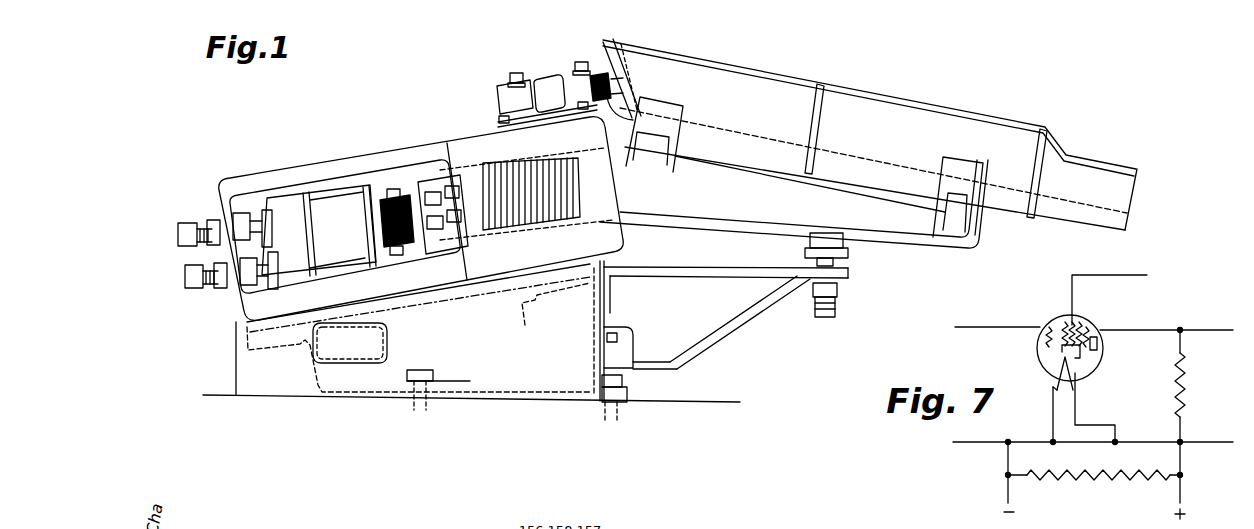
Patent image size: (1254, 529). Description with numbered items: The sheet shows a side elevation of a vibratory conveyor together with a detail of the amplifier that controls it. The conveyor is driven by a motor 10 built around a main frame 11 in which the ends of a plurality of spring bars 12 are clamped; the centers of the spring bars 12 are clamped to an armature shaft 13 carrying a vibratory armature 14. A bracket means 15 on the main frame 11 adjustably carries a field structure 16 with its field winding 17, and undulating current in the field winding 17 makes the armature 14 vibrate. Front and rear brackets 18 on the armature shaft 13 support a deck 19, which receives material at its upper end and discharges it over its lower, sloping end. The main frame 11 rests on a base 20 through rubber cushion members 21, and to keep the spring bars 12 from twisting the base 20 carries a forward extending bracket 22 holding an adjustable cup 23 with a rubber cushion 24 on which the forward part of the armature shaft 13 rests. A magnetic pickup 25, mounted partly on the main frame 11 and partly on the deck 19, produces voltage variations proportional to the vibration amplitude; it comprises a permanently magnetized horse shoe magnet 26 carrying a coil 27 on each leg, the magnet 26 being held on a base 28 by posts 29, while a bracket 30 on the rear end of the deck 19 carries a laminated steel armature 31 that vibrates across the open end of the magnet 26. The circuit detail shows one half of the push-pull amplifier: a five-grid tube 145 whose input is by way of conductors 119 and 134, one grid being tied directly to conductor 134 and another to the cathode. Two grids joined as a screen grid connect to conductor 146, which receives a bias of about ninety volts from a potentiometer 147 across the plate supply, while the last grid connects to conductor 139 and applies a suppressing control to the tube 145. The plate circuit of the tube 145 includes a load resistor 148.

In FIG. 1, the motor 10 is at (361, 140).
In FIG. 1, the main frame 11 is at (470, 153).
In FIG. 1, the spring bars 12 is at (580, 193).
In FIG. 1, the armature shaft 13 is at (763, 205).
In FIG. 1, the vibratory armature 14 is at (394, 198).
In FIG. 1, the bracket means 15 is at (255, 177).
In FIG. 1, the field structure 16 is at (319, 230).
In FIG. 1, the field winding 17 is at (327, 213).
In FIG. 1, the front and rear brackets 18 is at (685, 139).
In FIG. 1, the deck 19 is at (763, 87).
In FIG. 1, the base 20 is at (471, 340).
In FIG. 1, the rubber cushion members 21 is at (247, 322).
In FIG. 1, the forward extending bracket 22 is at (745, 325).
In FIG. 1, the adjustable cup 23 is at (850, 258).
In FIG. 1, the rubber cushion 24 is at (843, 240).
In FIG. 1, the magnetic pickup 25 is at (558, 62).
In FIG. 1, the horse shoe magnet 26 is at (503, 97).
In FIG. 1, the coils 27 is at (542, 78).
In FIG. 1, the base 28 is at (503, 124).
In FIG. 1, the posts 29 is at (515, 72).
In FIG. 1, the bracket 30 is at (613, 87).
In FIG. 1, the armature 31 is at (606, 78).
In FIG. 7, the conductor 119 is at (975, 443).
In FIG. 7, the conductor 134 is at (983, 325).
In FIG. 7, the conductor 139 is at (1135, 275).
In FIG. 7, the tube 145 is at (1088, 322).
In FIG. 7, the conductor 146 is at (1080, 408).
In FIG. 7, the potentiometer 147 is at (1137, 478).
In FIG. 7, the load resistor 148 is at (1182, 392).